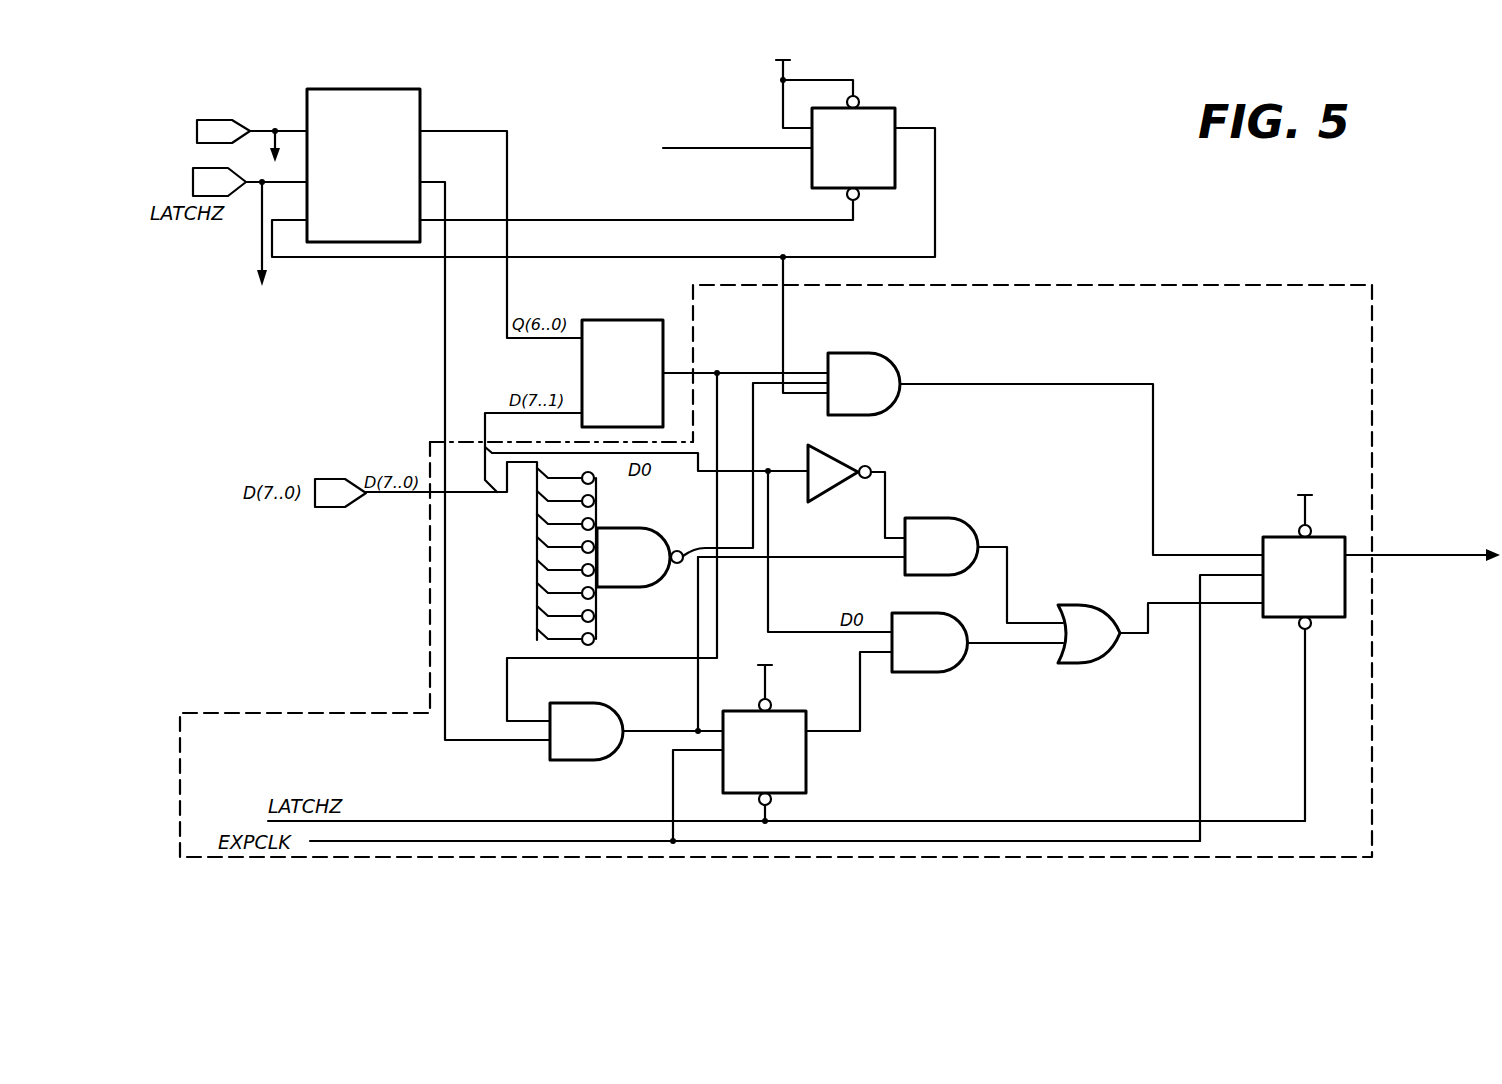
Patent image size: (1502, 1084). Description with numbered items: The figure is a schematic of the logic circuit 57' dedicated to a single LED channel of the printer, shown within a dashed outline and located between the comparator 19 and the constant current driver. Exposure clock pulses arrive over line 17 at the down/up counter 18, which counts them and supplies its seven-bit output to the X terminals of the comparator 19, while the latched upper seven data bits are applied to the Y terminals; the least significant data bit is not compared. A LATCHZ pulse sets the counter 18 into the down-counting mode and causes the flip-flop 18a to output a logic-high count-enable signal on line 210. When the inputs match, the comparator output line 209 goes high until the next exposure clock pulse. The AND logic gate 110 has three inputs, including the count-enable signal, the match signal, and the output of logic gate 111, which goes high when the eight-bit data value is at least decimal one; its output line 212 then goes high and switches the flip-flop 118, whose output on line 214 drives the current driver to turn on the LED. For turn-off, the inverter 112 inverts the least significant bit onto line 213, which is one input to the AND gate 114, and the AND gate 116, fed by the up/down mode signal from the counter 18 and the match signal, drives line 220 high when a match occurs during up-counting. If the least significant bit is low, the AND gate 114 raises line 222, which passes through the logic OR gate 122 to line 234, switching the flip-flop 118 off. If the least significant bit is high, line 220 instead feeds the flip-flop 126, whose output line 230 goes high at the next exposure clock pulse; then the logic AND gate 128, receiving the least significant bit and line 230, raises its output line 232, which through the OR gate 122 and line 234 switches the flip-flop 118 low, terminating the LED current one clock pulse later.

The line 17 is at (287, 128).
The down/up counter 18 is at (424, 104).
The flip-flop 18a is at (889, 108).
The comparator 19 is at (614, 304).
The logic circuit 57' is at (776, 551).
The AND logic gate 110 is at (900, 368).
The logic gate 111 is at (655, 528).
The inverter 112 is at (833, 452).
The AND gate 114 is at (950, 520).
The AND gate 116 is at (596, 702).
The flip-flop 118 is at (1265, 535).
The logic OR gate 122 is at (1075, 607).
The flip-flop 126 is at (806, 768).
The logic AND gate 128 is at (945, 613).
The output line 209 is at (756, 357).
The line 210 is at (936, 237).
The output line 212 is at (1115, 382).
The line 213 is at (887, 492).
The line 214 is at (1350, 552).
The line 220 is at (655, 735).
The line 222 is at (1010, 553).
The output line 230 is at (862, 717).
The output line 232 is at (1010, 648).
The output line 234 is at (1228, 603).